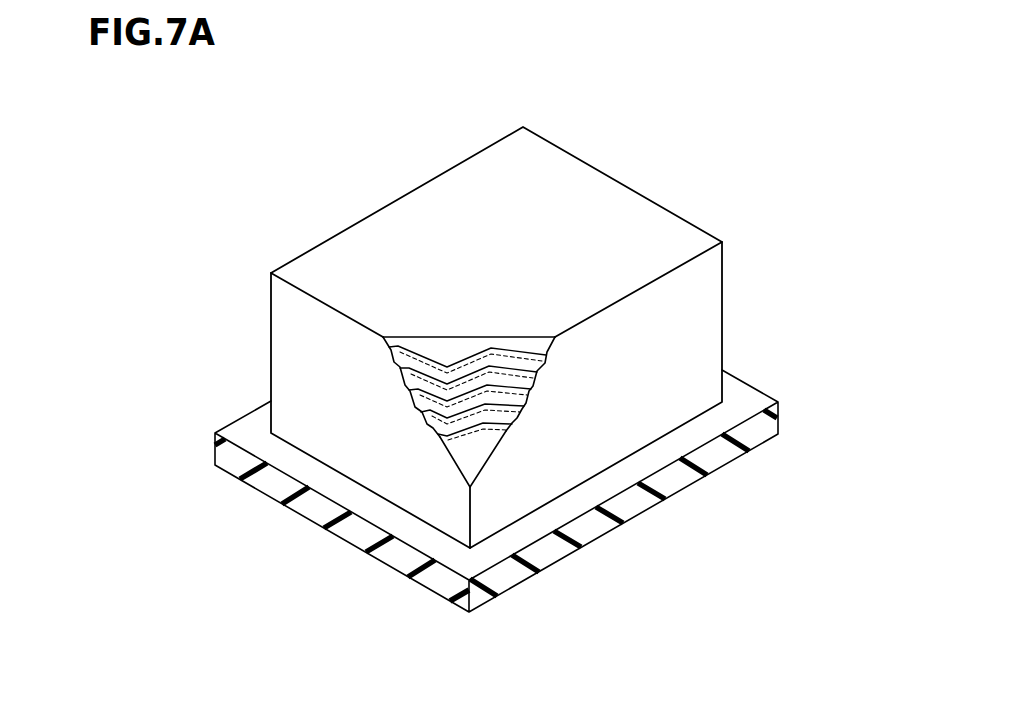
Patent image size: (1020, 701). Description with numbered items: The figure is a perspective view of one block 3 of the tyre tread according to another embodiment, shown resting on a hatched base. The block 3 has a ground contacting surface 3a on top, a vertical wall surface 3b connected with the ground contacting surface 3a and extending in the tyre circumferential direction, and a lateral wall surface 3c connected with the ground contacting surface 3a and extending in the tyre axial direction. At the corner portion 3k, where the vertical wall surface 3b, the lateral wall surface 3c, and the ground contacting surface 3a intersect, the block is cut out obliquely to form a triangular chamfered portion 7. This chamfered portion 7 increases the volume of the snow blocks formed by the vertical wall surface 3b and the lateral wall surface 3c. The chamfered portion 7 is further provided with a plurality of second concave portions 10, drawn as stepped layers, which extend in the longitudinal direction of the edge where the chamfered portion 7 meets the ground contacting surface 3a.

The block 3 is at (487, 344).
The ground contacting surface 3a is at (568, 193).
The vertical wall surface 3b is at (688, 323).
The lateral wall surface 3c is at (302, 373).
The corner portion 3k is at (369, 362).
The chamfered portion 7 is at (472, 450).
The second concave portion 10 is at (512, 397).